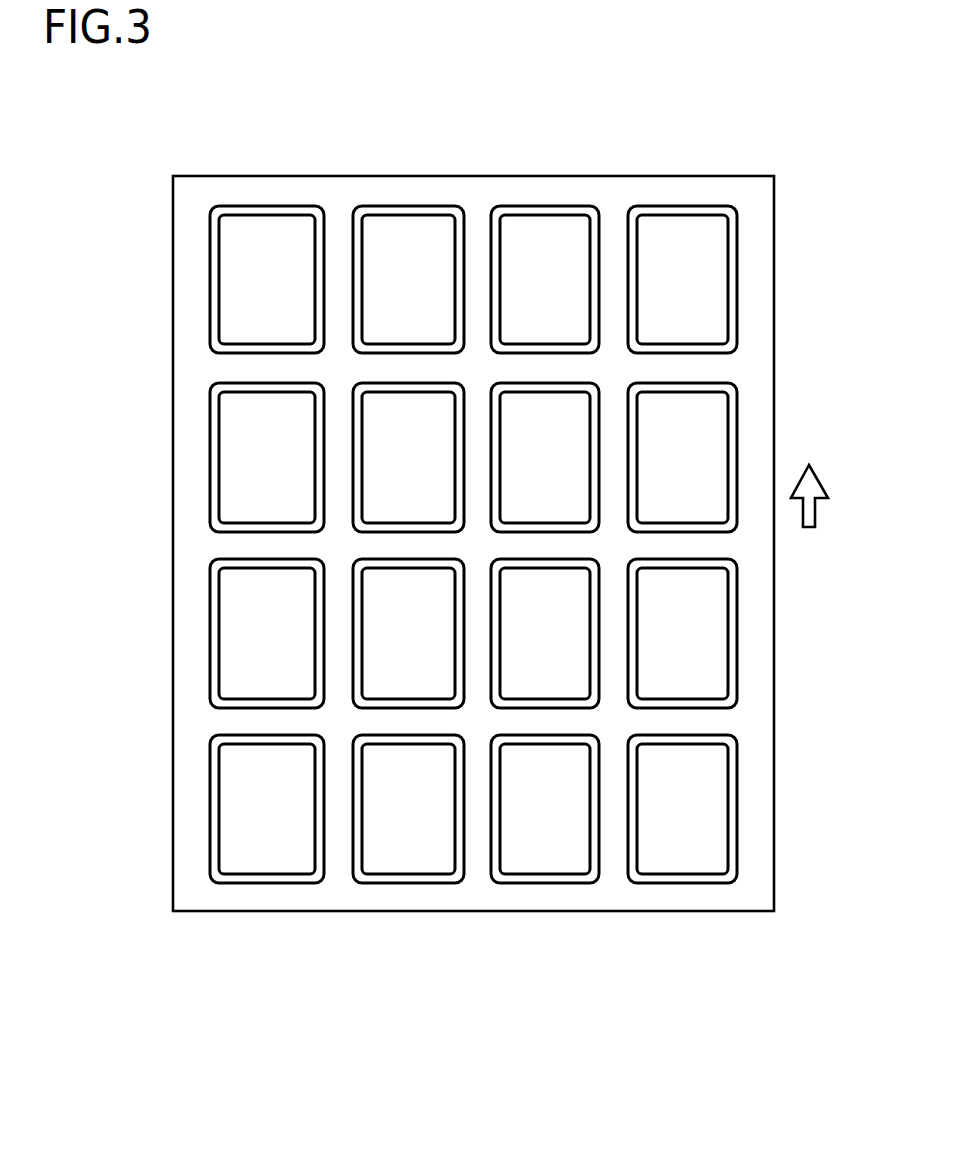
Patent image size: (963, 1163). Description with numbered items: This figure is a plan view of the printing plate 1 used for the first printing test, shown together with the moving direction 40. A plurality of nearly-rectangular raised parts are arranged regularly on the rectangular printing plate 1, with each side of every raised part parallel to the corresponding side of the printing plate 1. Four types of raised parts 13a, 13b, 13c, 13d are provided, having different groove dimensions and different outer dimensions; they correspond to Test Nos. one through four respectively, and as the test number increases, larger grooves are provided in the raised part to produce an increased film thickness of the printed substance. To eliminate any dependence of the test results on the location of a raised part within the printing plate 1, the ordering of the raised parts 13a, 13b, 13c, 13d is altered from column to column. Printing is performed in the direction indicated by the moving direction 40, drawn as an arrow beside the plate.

The printing plate 1 is at (762, 892).
The raised part 13a is at (270, 205).
The raised part 13b is at (407, 205).
The raised part 13c is at (542, 205).
The raised part 13d is at (675, 205).
The moving direction 40 is at (815, 512).